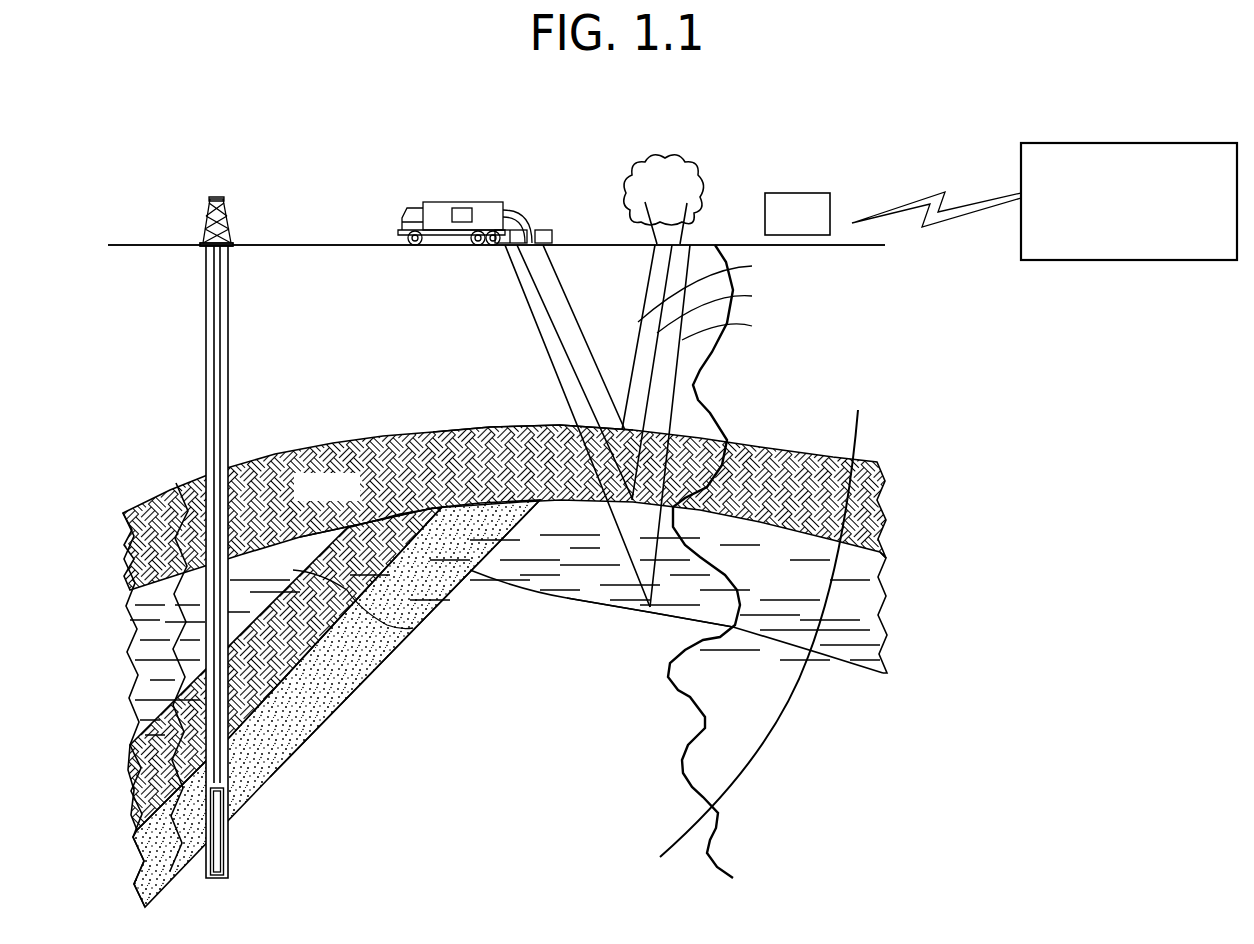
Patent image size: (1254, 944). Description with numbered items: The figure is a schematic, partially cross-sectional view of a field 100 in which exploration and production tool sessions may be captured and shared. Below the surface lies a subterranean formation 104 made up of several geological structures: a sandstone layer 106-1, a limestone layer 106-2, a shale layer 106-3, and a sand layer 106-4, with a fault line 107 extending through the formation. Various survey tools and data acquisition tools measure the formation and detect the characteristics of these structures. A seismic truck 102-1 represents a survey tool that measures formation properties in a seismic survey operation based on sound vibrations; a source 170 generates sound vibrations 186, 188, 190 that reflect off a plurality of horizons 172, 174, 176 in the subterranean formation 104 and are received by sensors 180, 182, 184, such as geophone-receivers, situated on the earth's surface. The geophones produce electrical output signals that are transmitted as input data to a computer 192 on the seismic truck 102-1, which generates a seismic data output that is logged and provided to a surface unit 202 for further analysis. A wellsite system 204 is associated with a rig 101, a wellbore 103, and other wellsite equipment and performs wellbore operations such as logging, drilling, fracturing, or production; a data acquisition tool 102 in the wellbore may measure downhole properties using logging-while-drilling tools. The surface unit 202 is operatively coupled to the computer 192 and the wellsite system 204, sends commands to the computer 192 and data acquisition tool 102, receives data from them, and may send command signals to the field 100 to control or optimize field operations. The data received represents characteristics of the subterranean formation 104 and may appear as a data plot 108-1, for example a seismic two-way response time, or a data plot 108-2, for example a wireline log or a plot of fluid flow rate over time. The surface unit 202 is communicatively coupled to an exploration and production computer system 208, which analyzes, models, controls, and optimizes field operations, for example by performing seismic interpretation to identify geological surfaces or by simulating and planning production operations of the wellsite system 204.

The field 100 is at (797, 150).
The rig 101 is at (194, 201).
The data acquisition tool 102 is at (223, 857).
The seismic truck 102-1 is at (433, 202).
The wellbore 103 is at (240, 367).
The subterranean formation 104 is at (520, 695).
The sandstone layer 106-1 is at (356, 499).
The limestone layer 106-2 is at (611, 566).
The shale layer 106-3 is at (340, 670).
The sand layer 106-4 is at (330, 697).
The fault line 107 is at (850, 437).
The data plot 108-1 is at (697, 735).
The data plot 108-2 is at (132, 672).
The source 170 is at (674, 188).
The horizon 172 is at (547, 421).
The horizon 174 is at (494, 488).
The horizon 176 is at (627, 608).
The sensor 180 is at (552, 230).
The sensor 182 is at (533, 215).
The sensor 184 is at (512, 206).
The sound vibration 186 is at (737, 325).
The sound vibration 188 is at (724, 306).
The sound vibration 190 is at (715, 286).
The computer 192 is at (463, 202).
The surface unit 202 is at (817, 229).
The wellsite system 204 is at (236, 222).
The exploration and production (E&P) computer system 208 is at (1087, 260).